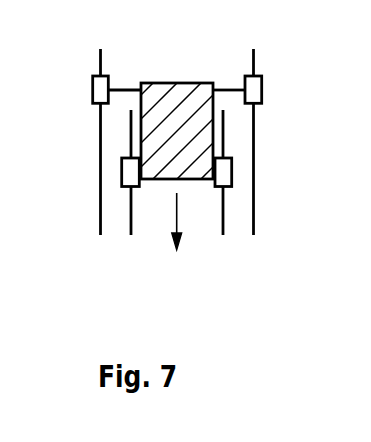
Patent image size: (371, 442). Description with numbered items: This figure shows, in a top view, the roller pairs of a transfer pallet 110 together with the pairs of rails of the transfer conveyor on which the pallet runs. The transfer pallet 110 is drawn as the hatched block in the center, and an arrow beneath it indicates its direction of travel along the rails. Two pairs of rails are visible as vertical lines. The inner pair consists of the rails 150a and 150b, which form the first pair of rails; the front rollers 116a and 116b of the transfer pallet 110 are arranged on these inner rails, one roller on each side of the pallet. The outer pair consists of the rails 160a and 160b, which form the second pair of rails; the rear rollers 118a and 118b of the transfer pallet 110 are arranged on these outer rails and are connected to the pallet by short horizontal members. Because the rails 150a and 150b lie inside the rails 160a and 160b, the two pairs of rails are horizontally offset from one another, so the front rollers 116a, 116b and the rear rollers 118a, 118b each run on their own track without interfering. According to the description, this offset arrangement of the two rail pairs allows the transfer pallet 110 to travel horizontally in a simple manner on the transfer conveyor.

The transfer pallet 110 is at (204, 72).
The front roller 116a is at (122, 168).
The front roller 116b is at (232, 168).
The rear roller 118a is at (93, 90).
The rear roller 118b is at (262, 90).
The rail 150a is at (131, 232).
The rail 150b is at (223, 232).
The rail 160a is at (100, 226).
The rail 160b is at (254, 226).